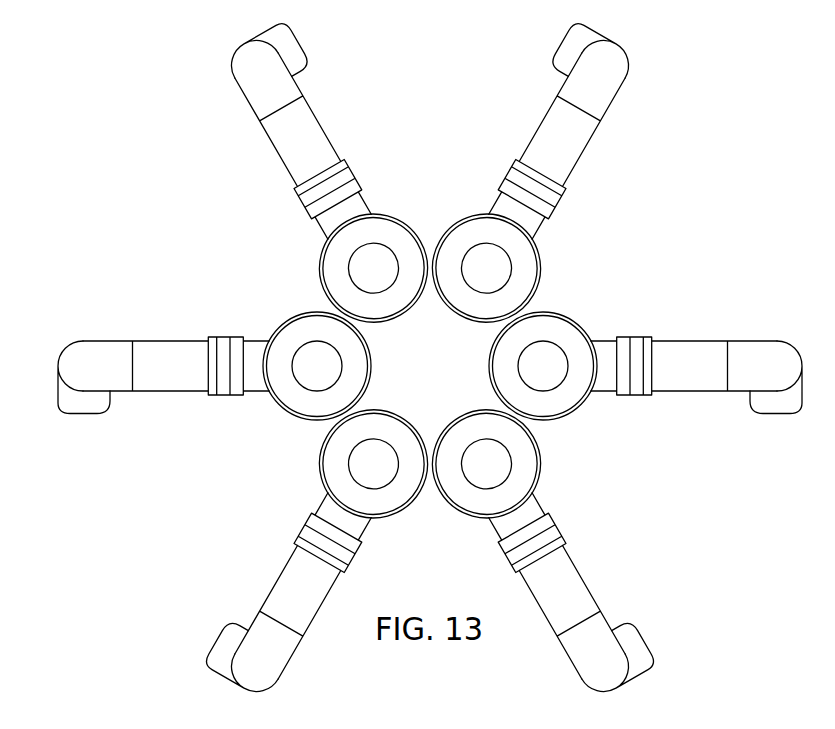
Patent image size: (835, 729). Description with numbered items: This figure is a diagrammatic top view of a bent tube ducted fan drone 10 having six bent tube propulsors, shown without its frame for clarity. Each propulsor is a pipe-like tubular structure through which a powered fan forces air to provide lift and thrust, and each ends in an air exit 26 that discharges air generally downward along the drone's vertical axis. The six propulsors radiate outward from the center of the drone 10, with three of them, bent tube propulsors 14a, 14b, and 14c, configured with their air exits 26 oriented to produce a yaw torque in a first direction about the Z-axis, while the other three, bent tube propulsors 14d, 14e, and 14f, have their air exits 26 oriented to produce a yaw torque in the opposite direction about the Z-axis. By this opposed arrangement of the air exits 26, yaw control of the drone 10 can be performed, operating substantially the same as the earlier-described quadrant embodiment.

The drone 10 is at (120, 167).
The bent tube propulsor 14a is at (639, 119).
The bent tube propulsor 14b is at (605, 559).
The bent tube propulsor 14c is at (167, 422).
The bent tube propulsor 14d is at (713, 295).
The bent tube propulsor 14e is at (253, 563).
The bent tube propulsor 14f is at (245, 160).
The air exit 26 is at (328, 52).